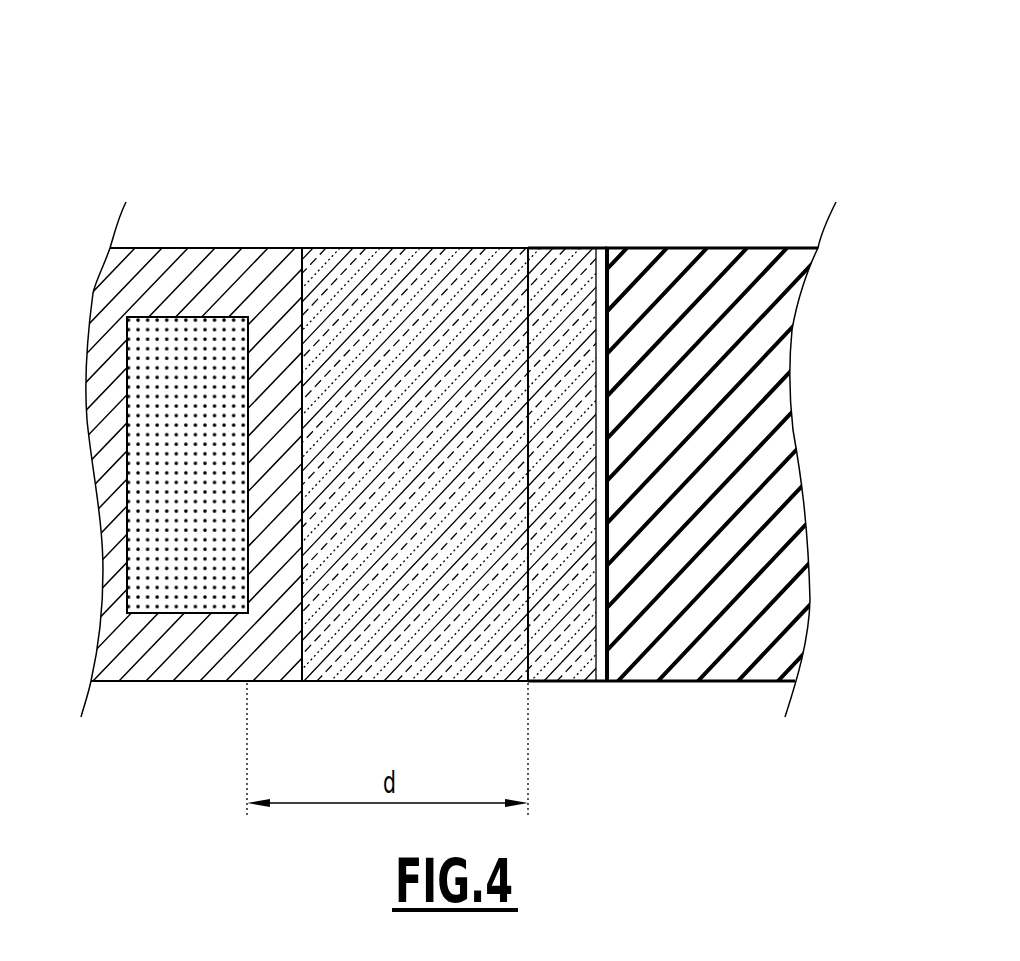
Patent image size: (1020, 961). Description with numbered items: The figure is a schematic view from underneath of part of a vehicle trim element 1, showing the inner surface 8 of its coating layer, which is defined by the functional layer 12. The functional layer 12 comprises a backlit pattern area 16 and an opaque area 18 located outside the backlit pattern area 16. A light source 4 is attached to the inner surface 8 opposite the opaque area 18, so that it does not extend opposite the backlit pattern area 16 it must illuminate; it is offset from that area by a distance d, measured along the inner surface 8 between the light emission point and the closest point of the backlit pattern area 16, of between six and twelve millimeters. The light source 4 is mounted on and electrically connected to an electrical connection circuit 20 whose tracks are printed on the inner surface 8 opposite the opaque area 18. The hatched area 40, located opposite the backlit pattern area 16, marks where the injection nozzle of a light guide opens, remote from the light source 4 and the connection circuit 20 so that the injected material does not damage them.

The vehicle trim element 1 is at (236, 130).
The light source 4 is at (152, 565).
The inner surface 8 is at (363, 627).
The functional layer 12 is at (478, 615).
The backlit pattern area 16 is at (565, 287).
The opaque area 18 is at (363, 330).
The electrical connection circuit 20 is at (187, 643).
The hatched area 40 is at (780, 530).